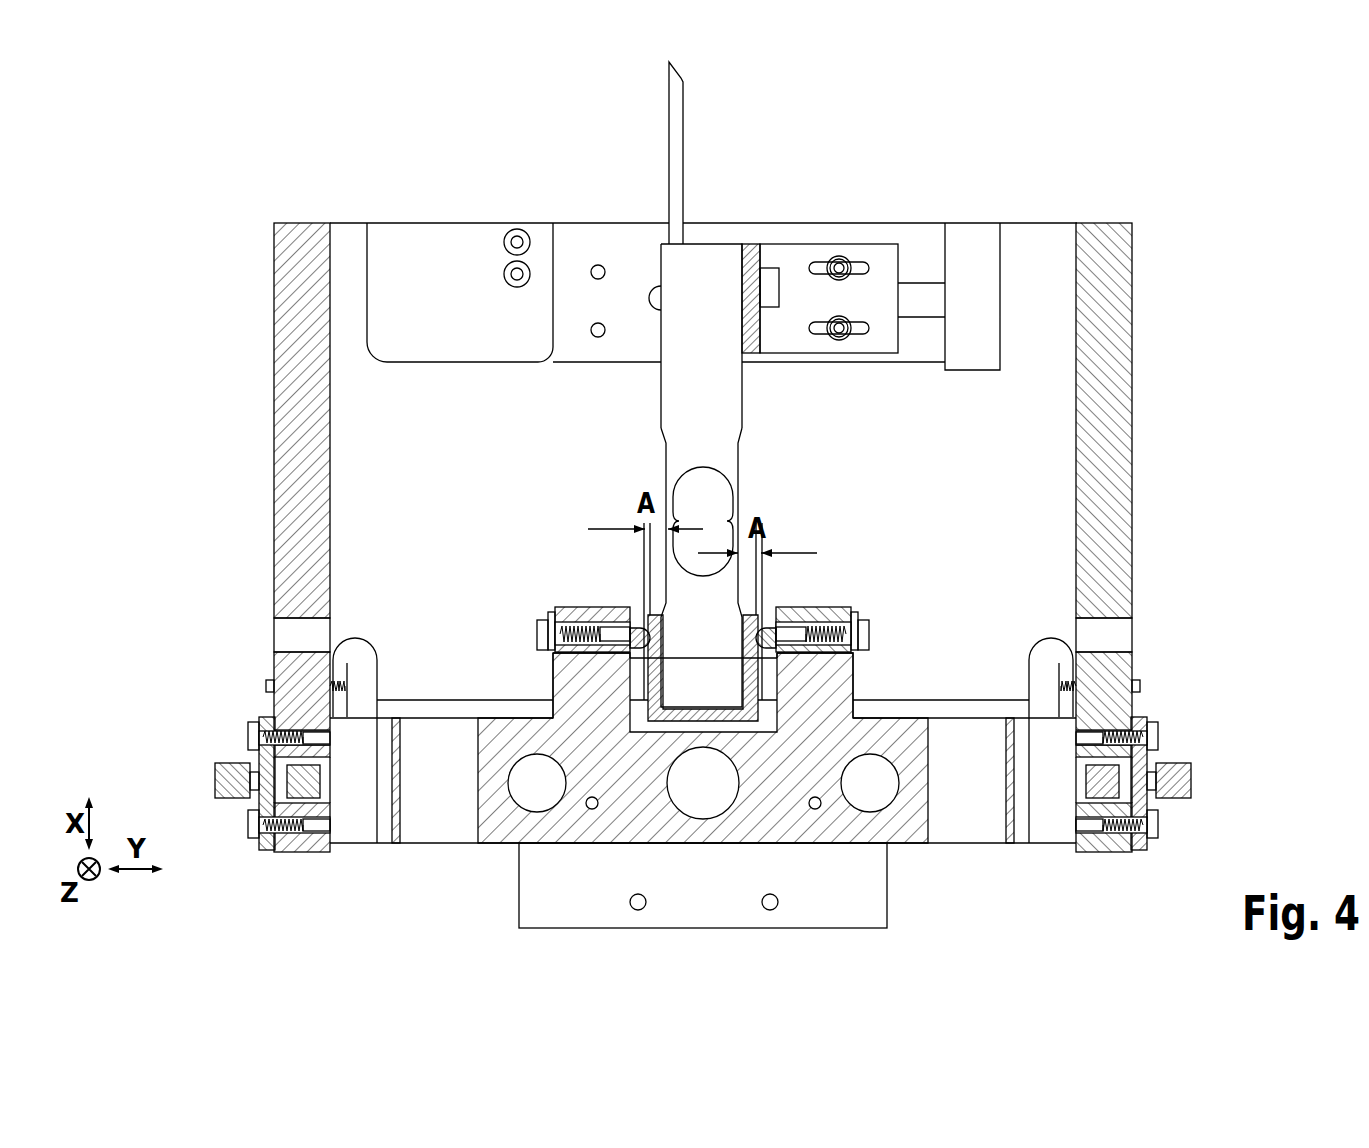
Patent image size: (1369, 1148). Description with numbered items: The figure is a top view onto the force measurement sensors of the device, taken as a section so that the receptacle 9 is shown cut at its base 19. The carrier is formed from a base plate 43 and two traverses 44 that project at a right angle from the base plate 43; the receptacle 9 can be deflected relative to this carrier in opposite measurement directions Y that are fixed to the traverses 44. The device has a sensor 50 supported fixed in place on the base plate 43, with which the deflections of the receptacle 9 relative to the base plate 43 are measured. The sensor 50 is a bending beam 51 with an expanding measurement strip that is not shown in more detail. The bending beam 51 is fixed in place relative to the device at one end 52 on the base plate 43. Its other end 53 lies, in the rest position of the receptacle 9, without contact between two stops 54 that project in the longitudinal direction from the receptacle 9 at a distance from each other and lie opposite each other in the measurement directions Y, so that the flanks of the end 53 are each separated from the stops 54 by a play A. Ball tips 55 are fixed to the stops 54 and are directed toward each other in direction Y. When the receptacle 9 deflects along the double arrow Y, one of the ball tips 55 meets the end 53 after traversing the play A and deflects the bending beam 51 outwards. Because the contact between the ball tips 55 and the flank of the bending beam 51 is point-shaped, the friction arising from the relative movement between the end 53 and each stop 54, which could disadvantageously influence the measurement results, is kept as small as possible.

The receptacle 9 is at (820, 852).
The base 19 is at (703, 790).
The base plate 43 is at (1036, 248).
The traverses 44 is at (292, 403).
The sensor 50 is at (688, 384).
The bending beam 51 is at (735, 415).
The end 52 is at (710, 255).
The end 53 is at (722, 712).
The stops 54 is at (557, 677).
The ball tips 55 is at (642, 612).